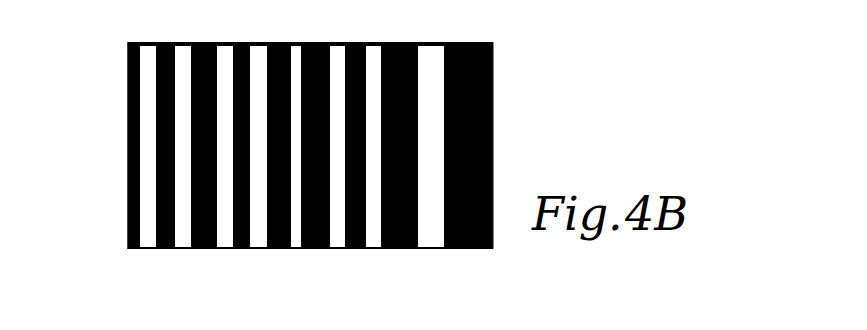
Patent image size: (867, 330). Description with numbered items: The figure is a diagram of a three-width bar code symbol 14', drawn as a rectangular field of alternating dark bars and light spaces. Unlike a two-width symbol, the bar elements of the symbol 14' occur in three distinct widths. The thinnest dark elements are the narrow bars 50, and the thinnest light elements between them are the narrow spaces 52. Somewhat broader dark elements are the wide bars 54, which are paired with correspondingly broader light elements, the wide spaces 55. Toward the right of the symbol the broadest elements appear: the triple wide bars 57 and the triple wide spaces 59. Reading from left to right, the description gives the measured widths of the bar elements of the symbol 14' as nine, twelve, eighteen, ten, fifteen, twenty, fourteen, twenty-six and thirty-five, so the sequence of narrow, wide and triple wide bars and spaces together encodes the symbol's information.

The three-width bar code symbol 14' is at (259, 145).
The narrow bars 50 is at (131, 250).
The narrow spaces 52 is at (147, 250).
The wide bars 54 is at (198, 250).
The wide spaces 55 is at (258, 250).
The triple wide bars 57 is at (397, 250).
The triple wide spaces 59 is at (430, 250).